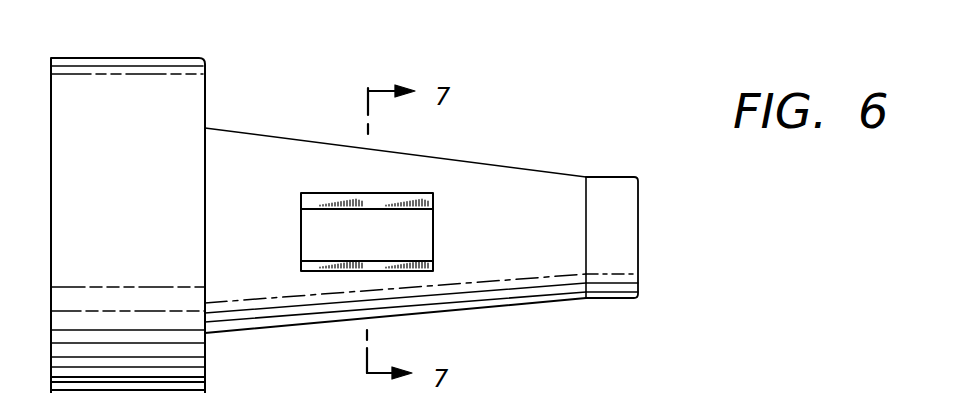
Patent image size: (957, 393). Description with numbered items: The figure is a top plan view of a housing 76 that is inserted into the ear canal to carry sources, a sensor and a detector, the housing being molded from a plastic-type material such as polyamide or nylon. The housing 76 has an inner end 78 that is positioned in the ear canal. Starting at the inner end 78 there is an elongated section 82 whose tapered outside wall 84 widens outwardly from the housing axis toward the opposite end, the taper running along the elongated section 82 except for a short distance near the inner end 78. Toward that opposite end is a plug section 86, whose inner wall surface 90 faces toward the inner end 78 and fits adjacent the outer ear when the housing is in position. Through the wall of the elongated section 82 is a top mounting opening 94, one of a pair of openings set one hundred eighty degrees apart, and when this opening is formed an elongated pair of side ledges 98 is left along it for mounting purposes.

The housing 76 is at (565, 93).
The inner end 78 is at (615, 177).
The elongated section 82 is at (463, 310).
The tapered outside wall 84 is at (510, 279).
The plug section 86 is at (123, 58).
The inner wall surface 90 is at (207, 97).
The top mounting opening 94 is at (428, 262).
The side ledges 98 is at (320, 200).